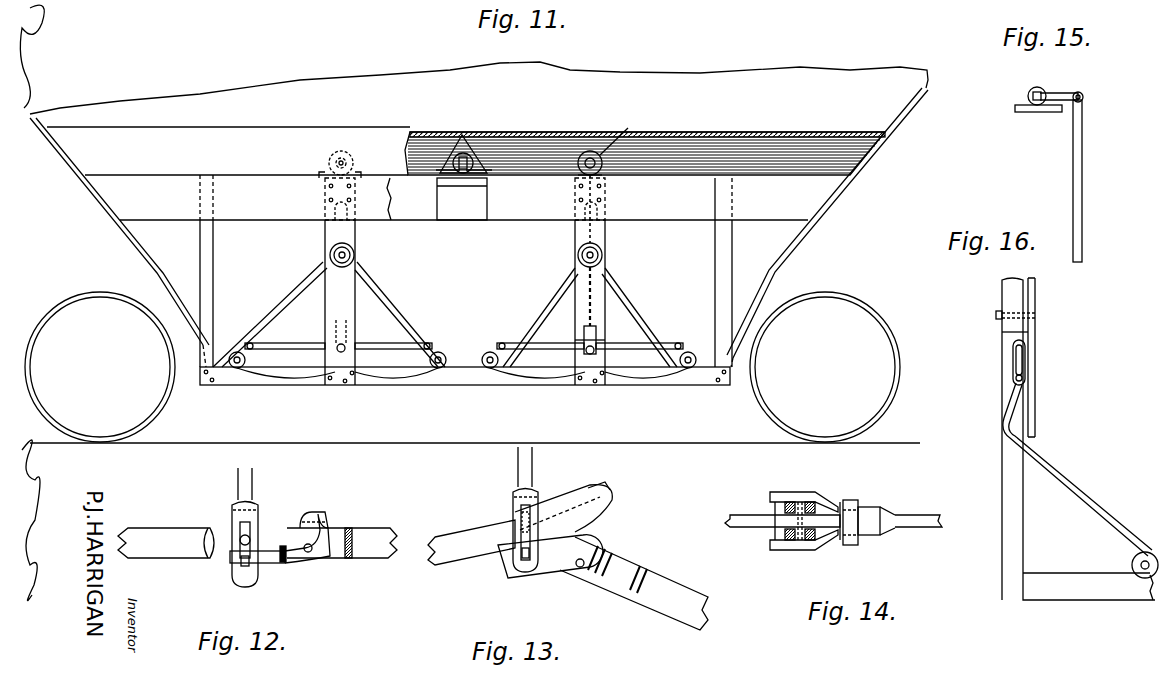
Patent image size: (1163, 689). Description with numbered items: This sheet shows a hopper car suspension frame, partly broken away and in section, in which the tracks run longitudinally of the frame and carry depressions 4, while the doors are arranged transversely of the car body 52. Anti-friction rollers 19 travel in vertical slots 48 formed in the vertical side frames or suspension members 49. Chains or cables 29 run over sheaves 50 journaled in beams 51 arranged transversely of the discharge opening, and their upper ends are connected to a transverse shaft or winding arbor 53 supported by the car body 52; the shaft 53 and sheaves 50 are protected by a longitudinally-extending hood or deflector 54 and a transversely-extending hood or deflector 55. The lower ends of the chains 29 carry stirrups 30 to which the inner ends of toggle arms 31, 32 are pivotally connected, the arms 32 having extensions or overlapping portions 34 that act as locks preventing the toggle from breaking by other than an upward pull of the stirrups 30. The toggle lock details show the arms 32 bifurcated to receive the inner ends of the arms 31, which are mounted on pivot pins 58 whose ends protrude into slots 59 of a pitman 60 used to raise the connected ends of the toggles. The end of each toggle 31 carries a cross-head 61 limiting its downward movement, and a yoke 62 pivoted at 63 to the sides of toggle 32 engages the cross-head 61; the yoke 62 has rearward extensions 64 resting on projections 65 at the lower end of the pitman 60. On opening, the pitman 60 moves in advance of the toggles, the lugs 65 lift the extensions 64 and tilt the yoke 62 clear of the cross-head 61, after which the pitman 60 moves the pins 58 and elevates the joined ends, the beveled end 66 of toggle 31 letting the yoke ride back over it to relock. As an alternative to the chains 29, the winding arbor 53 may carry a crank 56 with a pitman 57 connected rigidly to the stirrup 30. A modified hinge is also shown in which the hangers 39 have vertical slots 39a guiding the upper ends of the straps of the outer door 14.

In FIG. 11, the depressions 4 is at (399, 386).
In FIG. 16, the outer door 14 is at (1052, 472).
In FIG. 11, the anti-friction rollers 19 is at (356, 262).
In FIG. 11, the chains or cables 29 is at (596, 312).
In FIG. 11, the stirrups 30 is at (598, 336).
In FIG. 11, the toggle arm 31 is at (292, 340).
In FIG. 12, the toggle arm 31 is at (166, 543).
In FIG. 13, the toggle arm 31 is at (471, 542).
In FIG. 14, the toggle arm 31 is at (730, 514).
In FIG. 11, the toggle arm 32 is at (383, 340).
In FIG. 12, the toggle arm 32 is at (380, 534).
In FIG. 13, the toggle arm 32 is at (634, 583).
In FIG. 14, the toggle arm 32 is at (918, 515).
In FIG. 11, the extensions or overlapping portions 34 is at (570, 340).
In FIG. 16, the hangers 39 is at (1035, 330).
In FIG. 16, the vertical slots 39a is at (1015, 360).
In FIG. 11, the vertical slots 48 is at (356, 246).
In FIG. 11, the vertical side frames or suspension members 49 is at (578, 315).
In FIG. 11, the sheaves 50 is at (598, 152).
In FIG. 11, the beams 51 is at (632, 146).
In FIG. 11, the car body 52 is at (112, 226).
In FIG. 11, the transverse shaft or winding arbor 53 is at (458, 175).
In FIG. 15, the transverse shaft or winding arbor 53 is at (1022, 92).
In FIG. 11, the longitudinally-extending hood or deflector 54 is at (730, 133).
In FIG. 11, the transversely-extending hood or deflector 55 is at (470, 133).
In FIG. 15, the crank 56 is at (1057, 88).
In FIG. 15, the pitman 57 is at (1073, 143).
In FIG. 12, the pivot pins 58 is at (240, 540).
In FIG. 13, the pivot pins 58 is at (522, 520).
In FIG. 14, the pivot pins 58 is at (803, 541).
In FIG. 12, the slots 59 is at (252, 522).
In FIG. 13, the slots 59 is at (533, 500).
In FIG. 12, the pitman 60 is at (238, 483).
In FIG. 13, the pitman 60 is at (518, 460).
In FIG. 14, the pitman 60 is at (793, 492).
In FIG. 12, the cross-head 61 is at (330, 518).
In FIG. 13, the cross-head 61 is at (603, 484).
In FIG. 14, the cross-head 61 is at (880, 507).
In FIG. 12, the yoke 62 is at (312, 562).
In FIG. 13, the yoke 62 is at (572, 566).
In FIG. 14, the yoke 62 is at (852, 502).
In FIG. 12, the pivot 63 is at (312, 552).
In FIG. 13, the pivot 63 is at (583, 568).
In FIG. 12, the rearward extensions 64 is at (272, 563).
In FIG. 14, the rearward extensions 64 is at (778, 550).
In FIG. 12, the projections or lugs 65 is at (243, 565).
In FIG. 13, the projections or lugs 65 is at (520, 565).
In FIG. 13, the beveled end 66 is at (612, 500).